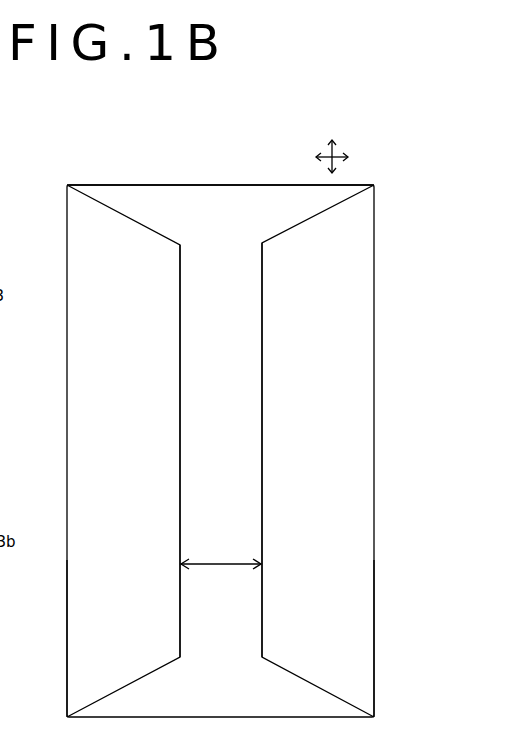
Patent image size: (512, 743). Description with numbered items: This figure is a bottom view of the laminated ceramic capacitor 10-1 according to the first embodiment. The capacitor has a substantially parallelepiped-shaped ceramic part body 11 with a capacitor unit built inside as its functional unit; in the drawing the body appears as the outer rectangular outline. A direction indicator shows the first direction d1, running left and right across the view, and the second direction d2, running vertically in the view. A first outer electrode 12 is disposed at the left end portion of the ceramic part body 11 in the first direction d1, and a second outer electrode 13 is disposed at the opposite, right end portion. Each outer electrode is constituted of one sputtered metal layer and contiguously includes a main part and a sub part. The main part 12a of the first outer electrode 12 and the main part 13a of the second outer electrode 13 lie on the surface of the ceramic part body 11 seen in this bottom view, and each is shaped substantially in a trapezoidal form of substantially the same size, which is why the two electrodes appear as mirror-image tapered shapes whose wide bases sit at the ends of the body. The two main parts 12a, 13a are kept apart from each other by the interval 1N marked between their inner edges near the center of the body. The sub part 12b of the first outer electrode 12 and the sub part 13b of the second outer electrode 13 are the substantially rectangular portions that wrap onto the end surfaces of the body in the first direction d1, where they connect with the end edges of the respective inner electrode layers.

The laminated ceramic capacitor 10-1 is at (114, 181).
The ceramic part body 11 is at (216, 184).
The first outer electrode 12 is at (66, 347).
The main part 12a is at (100, 487).
The sub part 12b is at (60, 597).
The second outer electrode 13 is at (374, 347).
The main part 13a is at (345, 490).
The sub part 13b is at (380, 597).
The interval 1N is at (221, 556).
The first direction d1 is at (344, 158).
The second direction d2 is at (331, 146).